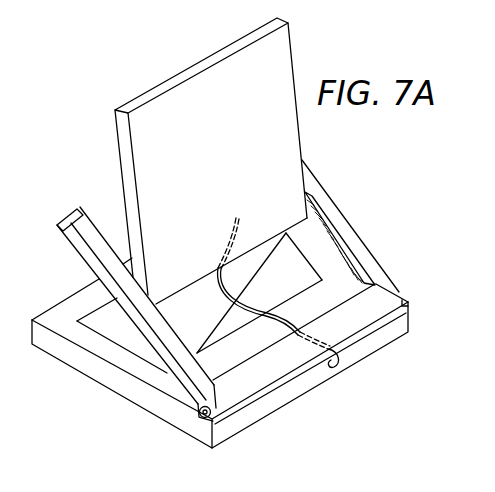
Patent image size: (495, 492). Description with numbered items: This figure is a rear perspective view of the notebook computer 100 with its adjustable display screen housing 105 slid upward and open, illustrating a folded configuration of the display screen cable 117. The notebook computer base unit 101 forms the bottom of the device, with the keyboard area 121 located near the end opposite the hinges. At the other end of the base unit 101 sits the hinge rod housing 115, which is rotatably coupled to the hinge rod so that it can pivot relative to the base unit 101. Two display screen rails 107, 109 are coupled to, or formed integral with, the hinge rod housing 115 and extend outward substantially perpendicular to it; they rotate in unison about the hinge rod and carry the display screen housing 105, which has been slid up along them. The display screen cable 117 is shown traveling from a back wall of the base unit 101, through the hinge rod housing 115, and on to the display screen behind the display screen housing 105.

The notebook computer 100 is at (251, 237).
The notebook computer base unit 101 is at (220, 340).
The display screen housing 105 is at (211, 161).
The display screen rail 107 is at (358, 226).
The display screen rail 109 is at (118, 285).
The hinge rod housing 115 is at (342, 349).
The display screen cable 117 is at (278, 292).
The keyboard area 121 is at (156, 399).